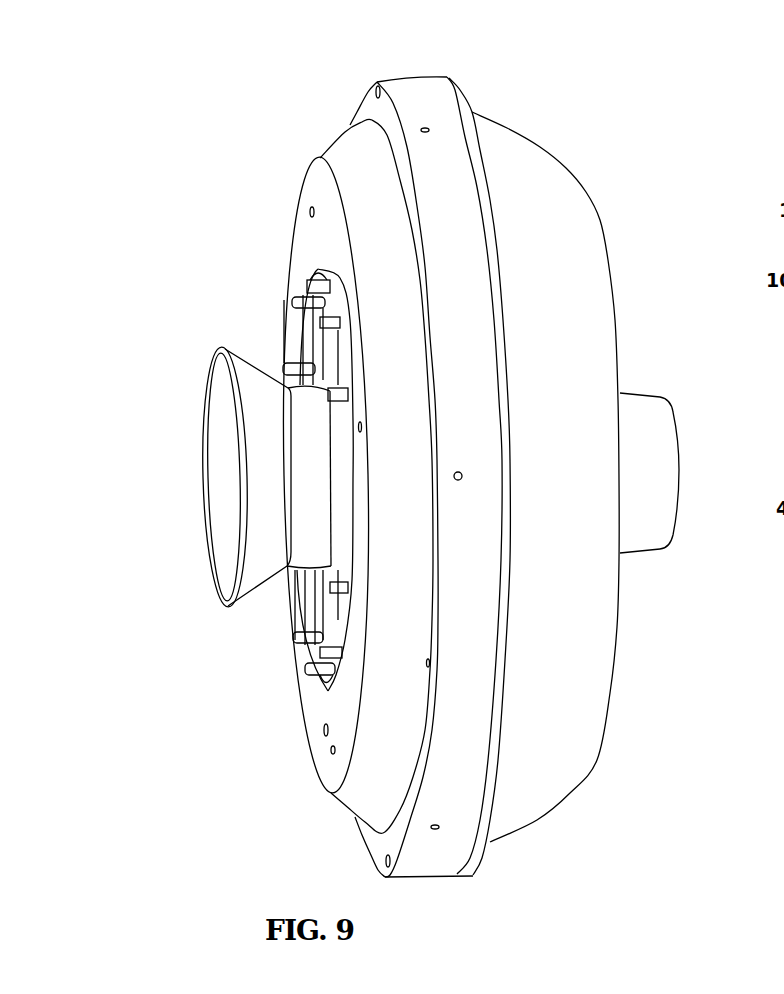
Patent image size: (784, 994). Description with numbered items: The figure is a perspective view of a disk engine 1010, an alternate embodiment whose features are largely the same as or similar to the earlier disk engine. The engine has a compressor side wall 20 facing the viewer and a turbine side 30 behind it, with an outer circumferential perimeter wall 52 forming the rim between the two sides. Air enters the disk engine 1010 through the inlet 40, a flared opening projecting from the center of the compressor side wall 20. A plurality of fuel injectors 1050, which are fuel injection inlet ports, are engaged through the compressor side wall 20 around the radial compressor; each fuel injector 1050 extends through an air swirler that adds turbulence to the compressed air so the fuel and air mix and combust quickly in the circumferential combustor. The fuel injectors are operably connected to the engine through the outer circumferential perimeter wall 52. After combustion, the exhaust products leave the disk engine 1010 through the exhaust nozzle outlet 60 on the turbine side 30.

The disk engine 1010 is at (550, 82).
The compressor side wall 20 is at (317, 183).
The turbine side 30 is at (598, 212).
The inlet 40 is at (223, 530).
The outer circumferential perimeter wall 52 is at (427, 860).
The exhaust nozzle outlet 60 is at (682, 467).
The fuel injectors 1050 is at (308, 285).